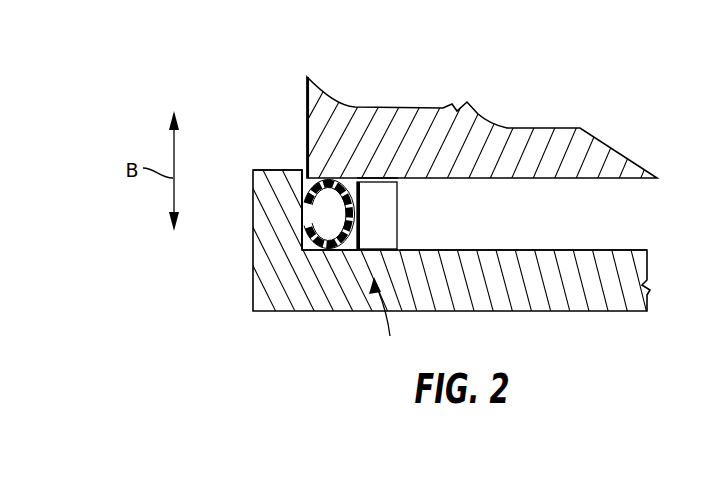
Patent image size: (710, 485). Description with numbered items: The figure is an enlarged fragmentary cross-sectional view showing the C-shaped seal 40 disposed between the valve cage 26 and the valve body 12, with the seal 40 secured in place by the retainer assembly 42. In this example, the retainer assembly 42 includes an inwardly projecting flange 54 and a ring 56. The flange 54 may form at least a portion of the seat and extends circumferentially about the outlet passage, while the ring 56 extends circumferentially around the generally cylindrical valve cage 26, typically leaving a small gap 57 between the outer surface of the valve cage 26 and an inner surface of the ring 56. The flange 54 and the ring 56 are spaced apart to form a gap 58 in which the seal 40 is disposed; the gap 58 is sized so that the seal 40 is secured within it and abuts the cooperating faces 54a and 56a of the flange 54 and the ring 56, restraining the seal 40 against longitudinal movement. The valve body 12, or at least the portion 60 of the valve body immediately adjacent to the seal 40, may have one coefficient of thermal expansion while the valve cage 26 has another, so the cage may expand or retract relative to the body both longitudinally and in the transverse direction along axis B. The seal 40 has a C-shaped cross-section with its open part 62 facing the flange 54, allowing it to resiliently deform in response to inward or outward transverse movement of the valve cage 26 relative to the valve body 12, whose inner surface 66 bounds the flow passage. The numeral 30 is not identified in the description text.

The valve body 12 is at (288, 311).
The valve cage 26 is at (490, 140).
The end face of rotatable member 30 is at (306, 113).
The seal 40 is at (343, 178).
The retainer assembly 42 is at (384, 318).
The flange 54 is at (267, 170).
The face of the flange 54a is at (306, 176).
The ring 56 is at (386, 208).
The face of the ring 56a is at (338, 252).
The gap 57 is at (383, 178).
The gap 58 is at (336, 262).
The portion of the valve body 60 is at (320, 292).
The open part 62 is at (303, 215).
The inner surface 66 is at (590, 251).